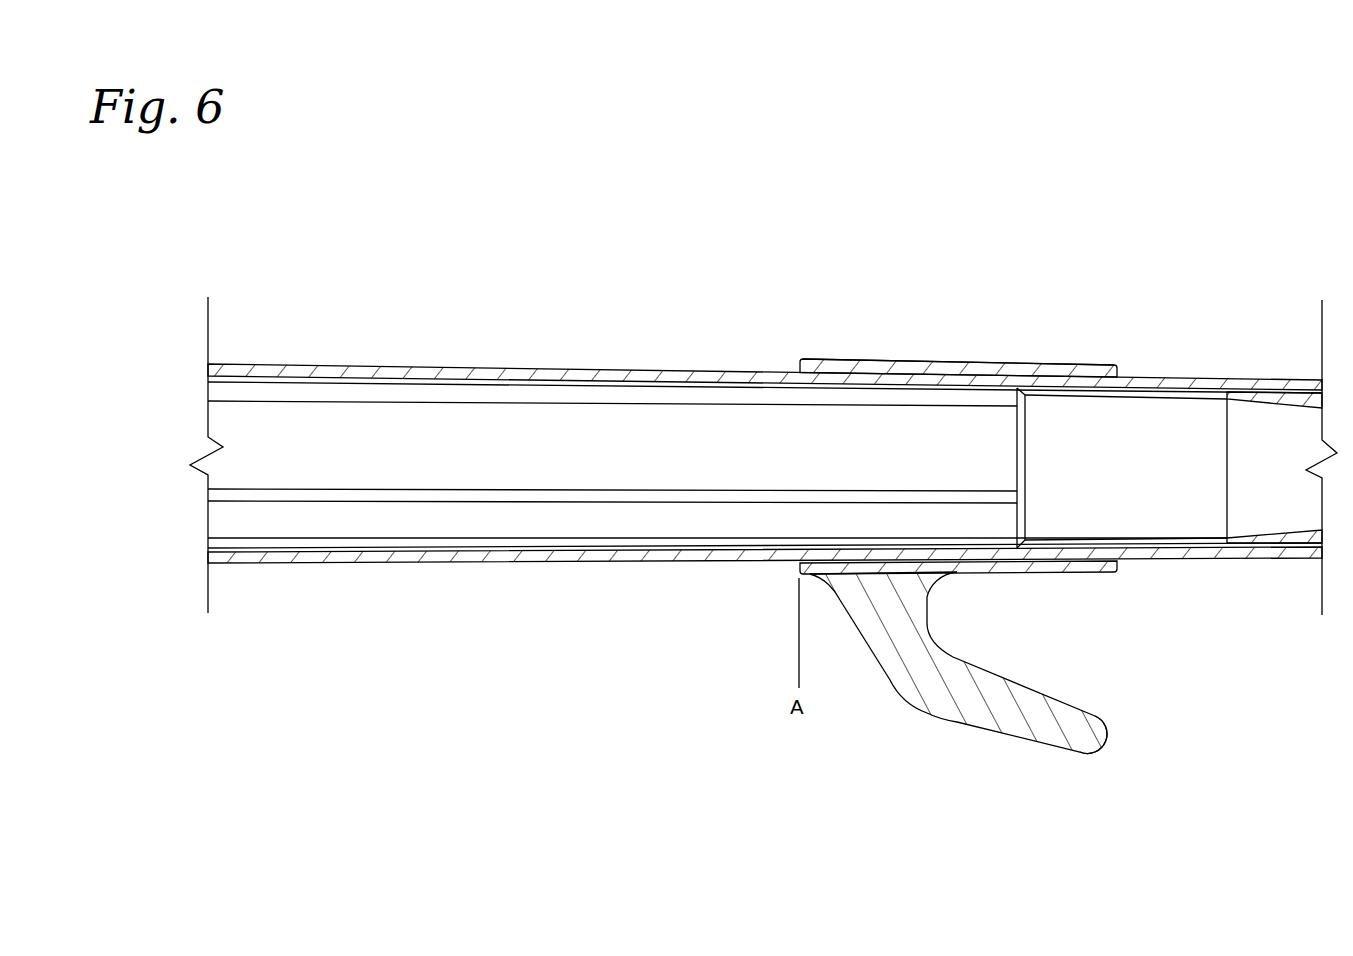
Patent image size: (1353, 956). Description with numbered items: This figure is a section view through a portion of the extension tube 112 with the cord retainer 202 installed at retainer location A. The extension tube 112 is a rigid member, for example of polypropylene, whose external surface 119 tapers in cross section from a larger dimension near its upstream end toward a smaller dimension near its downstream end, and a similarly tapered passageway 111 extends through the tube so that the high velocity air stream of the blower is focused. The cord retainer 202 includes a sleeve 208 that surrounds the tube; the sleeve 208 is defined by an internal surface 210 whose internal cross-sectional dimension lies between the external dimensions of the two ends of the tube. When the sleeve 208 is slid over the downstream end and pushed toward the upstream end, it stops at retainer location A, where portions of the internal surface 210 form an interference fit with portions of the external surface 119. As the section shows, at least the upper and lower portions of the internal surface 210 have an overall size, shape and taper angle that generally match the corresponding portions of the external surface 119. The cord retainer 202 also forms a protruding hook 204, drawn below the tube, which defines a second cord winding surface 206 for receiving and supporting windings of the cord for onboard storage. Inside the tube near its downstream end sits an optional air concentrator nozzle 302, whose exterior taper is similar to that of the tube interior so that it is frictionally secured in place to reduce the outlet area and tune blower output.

The passageway 111 is at (547, 427).
The extension tube 112 is at (642, 368).
The external surface 119 is at (1158, 378).
The cord retainer 202 is at (822, 359).
The hook 204 is at (1035, 742).
The second cord winding surface 206 is at (960, 655).
The sleeve 208 is at (897, 359).
The internal surface 210 is at (982, 386).
The air concentrator nozzle 302 is at (1155, 553).